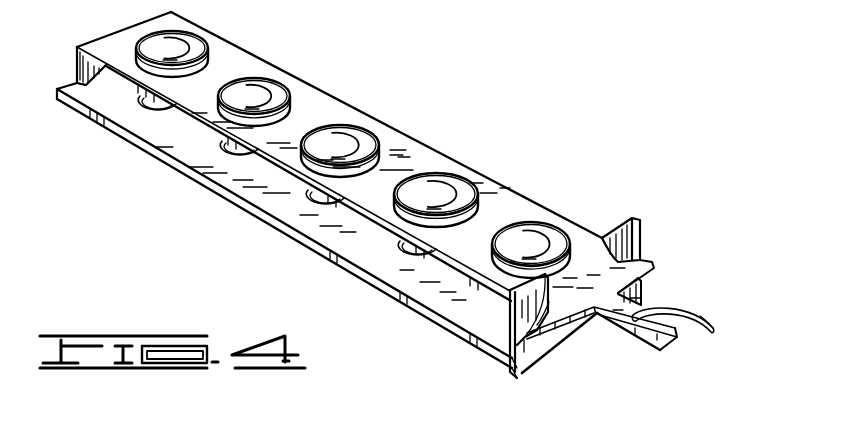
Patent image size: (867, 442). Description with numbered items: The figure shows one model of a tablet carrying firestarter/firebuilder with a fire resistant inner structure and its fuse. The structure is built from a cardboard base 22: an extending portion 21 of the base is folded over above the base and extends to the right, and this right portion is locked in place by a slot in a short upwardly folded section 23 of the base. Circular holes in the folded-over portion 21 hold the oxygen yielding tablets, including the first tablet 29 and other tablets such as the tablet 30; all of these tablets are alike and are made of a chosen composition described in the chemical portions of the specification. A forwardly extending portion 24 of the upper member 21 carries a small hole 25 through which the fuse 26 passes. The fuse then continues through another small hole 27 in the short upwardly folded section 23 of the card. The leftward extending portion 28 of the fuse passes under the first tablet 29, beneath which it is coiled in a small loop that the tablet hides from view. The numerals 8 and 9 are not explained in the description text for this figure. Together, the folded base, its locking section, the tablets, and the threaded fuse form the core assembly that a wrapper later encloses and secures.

The extending portion of the cardboard base 21 is at (458, 163).
The cardboard base 22 is at (343, 265).
The first tablet 29 is at (284, 77).
The tablet 30 is at (398, 148).
The bent-up tab 8 is at (652, 263).
The leftward extending portion of the fuse 28 is at (500, 305).
The base plate corner 9 is at (512, 360).
The short upwardly folded section of the base 23 is at (528, 358).
The small hole 27 is at (605, 325).
The forwardly extending portion of the upper member 24 is at (650, 350).
The small hole 25 is at (641, 306).
The fuse 26 is at (700, 317).